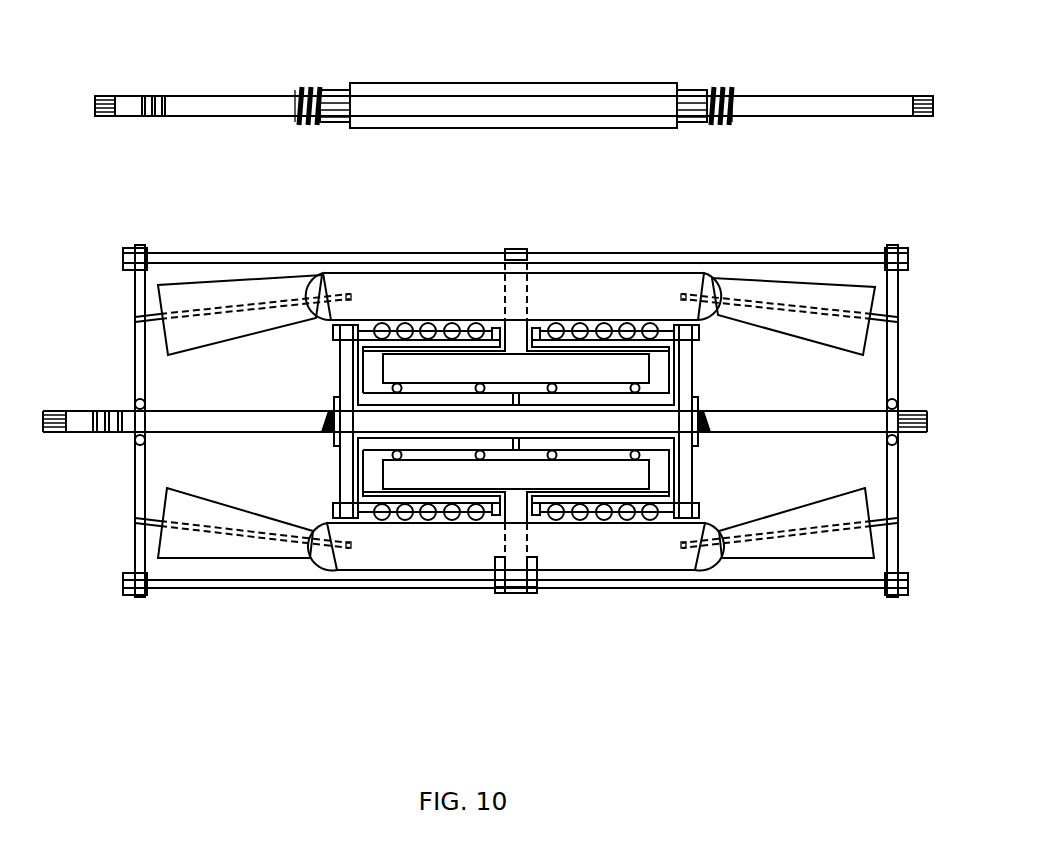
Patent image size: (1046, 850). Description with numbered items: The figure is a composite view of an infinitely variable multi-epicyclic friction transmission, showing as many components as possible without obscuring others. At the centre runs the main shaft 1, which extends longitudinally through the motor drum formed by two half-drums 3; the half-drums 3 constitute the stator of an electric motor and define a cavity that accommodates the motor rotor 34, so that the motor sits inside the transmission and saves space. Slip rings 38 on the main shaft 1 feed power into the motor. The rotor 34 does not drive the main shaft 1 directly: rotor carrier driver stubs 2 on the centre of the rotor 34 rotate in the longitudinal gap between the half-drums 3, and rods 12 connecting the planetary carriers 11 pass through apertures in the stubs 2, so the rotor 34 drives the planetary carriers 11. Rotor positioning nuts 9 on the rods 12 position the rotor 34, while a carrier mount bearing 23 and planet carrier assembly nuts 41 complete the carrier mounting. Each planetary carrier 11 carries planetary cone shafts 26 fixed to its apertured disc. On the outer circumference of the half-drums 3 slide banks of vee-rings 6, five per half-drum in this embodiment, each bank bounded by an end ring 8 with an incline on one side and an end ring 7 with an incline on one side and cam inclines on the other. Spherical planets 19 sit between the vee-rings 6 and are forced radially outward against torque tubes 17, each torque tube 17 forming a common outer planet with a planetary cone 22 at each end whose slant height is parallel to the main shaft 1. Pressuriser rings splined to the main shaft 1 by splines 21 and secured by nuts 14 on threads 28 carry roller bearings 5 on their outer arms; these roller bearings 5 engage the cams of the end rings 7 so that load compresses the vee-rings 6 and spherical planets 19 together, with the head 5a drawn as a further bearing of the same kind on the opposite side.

The main shaft 1 is at (870, 100).
The rotor carrier driver stub 2 is at (513, 290).
The half-drum 3 is at (363, 395).
The roller bearing 5 is at (345, 290).
The rounded head 5a is at (665, 520).
The vee-ring 6 is at (450, 322).
The end ring 7 is at (367, 340).
The end ring 8 is at (493, 326).
The rotor positioning nut 9 is at (516, 594).
The planetary carrier 11 is at (140, 345).
The rod 12 is at (850, 256).
The nut 14 is at (330, 400).
The torque tube 17 is at (628, 272).
The spherical planet 19 is at (400, 318).
The spline 21 is at (335, 92).
The planetary cone 22 is at (800, 300).
The carrier mount bearing 23 is at (136, 444).
The planetary cone shaft 26 is at (230, 305).
The thread 28 is at (305, 88).
The motor rotor 34 is at (457, 372).
The slip ring 38 is at (163, 96).
The planet carrier assembly nut 41 is at (135, 250).